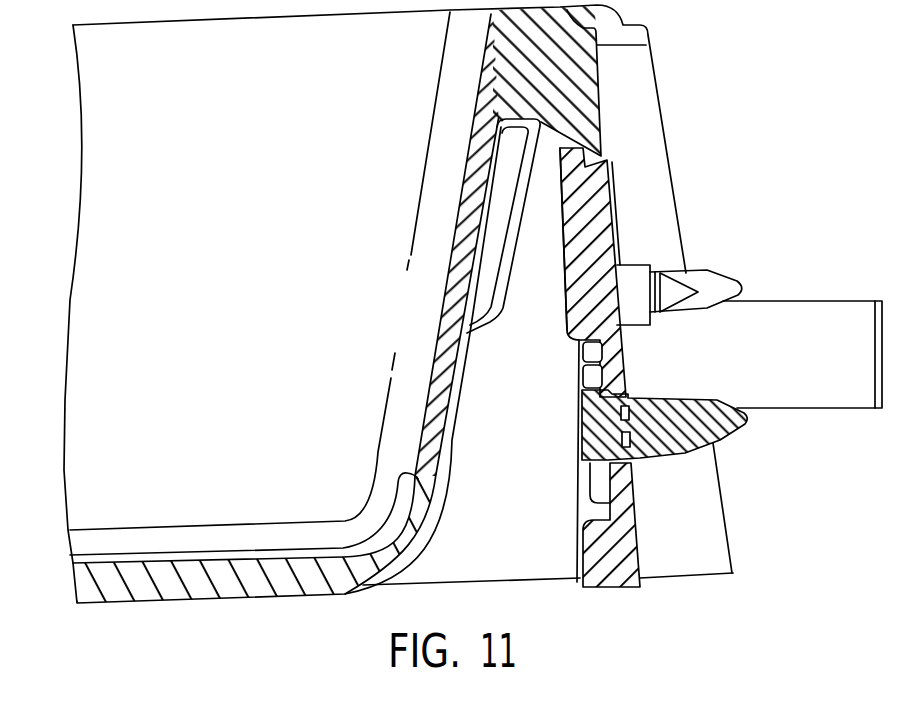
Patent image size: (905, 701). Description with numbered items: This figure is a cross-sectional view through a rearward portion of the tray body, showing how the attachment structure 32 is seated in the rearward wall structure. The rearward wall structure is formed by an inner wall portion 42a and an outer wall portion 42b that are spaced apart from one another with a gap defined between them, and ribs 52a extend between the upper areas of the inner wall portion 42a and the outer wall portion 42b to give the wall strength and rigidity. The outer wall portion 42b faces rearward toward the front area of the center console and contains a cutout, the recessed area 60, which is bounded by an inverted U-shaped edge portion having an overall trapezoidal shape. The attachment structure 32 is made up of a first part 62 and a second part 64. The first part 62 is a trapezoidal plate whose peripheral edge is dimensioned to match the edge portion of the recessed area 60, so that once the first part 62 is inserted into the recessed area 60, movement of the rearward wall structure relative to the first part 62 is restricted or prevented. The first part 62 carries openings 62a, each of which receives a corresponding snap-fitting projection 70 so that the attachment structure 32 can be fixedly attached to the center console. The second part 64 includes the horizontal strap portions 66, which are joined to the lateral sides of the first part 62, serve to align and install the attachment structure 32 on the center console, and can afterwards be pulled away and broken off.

The attachment structure 32 is at (622, 207).
The inner wall portion 42a is at (438, 397).
The outer wall portion 42b is at (588, 97).
The ribs 52a is at (490, 263).
The recessed area 60 is at (582, 213).
The first part 62 is at (588, 245).
The openings 62a is at (603, 442).
The second part 64 is at (807, 294).
The horizontal strap portions 66 is at (840, 377).
The snap-fitting projections 70 is at (725, 281).